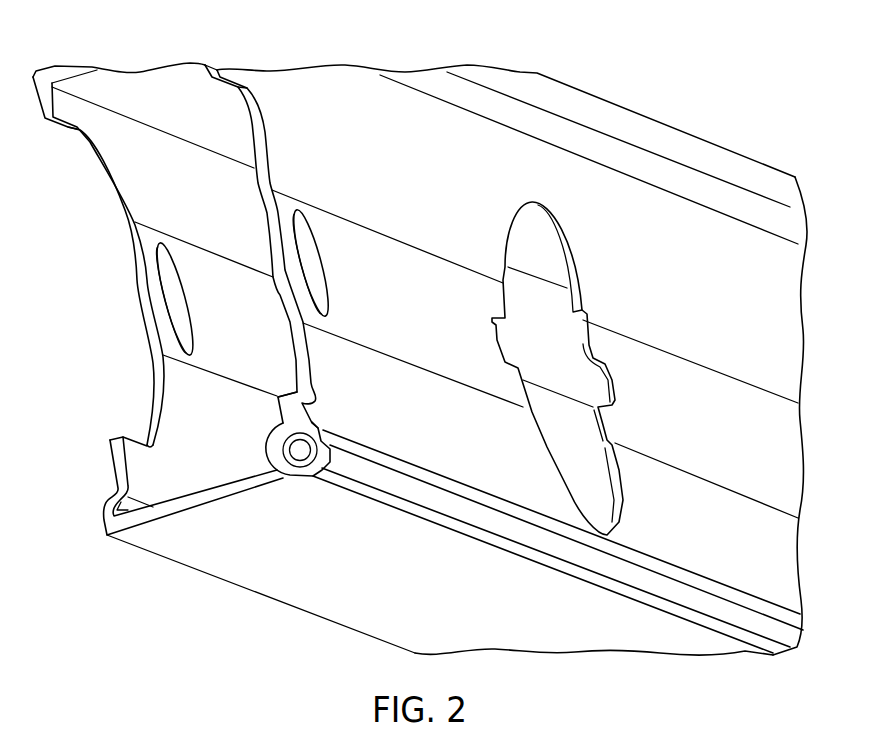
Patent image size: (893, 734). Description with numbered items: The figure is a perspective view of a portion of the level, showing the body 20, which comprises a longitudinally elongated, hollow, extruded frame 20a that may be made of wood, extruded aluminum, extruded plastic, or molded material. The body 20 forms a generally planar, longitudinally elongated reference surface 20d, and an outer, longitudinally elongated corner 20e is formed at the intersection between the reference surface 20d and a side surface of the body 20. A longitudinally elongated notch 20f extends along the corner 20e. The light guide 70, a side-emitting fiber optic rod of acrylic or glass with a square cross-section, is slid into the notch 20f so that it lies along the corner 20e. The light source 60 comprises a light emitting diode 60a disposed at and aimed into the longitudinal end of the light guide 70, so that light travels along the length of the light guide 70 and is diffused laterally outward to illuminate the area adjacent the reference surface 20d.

The body 20 is at (335, 97).
The frame 20a is at (557, 127).
The reference surface 20d is at (403, 584).
The corner 20e is at (526, 556).
The notch 20f is at (313, 470).
The light source 60 is at (297, 450).
The light emitting diode 60a is at (257, 435).
The light guide 70 is at (613, 567).